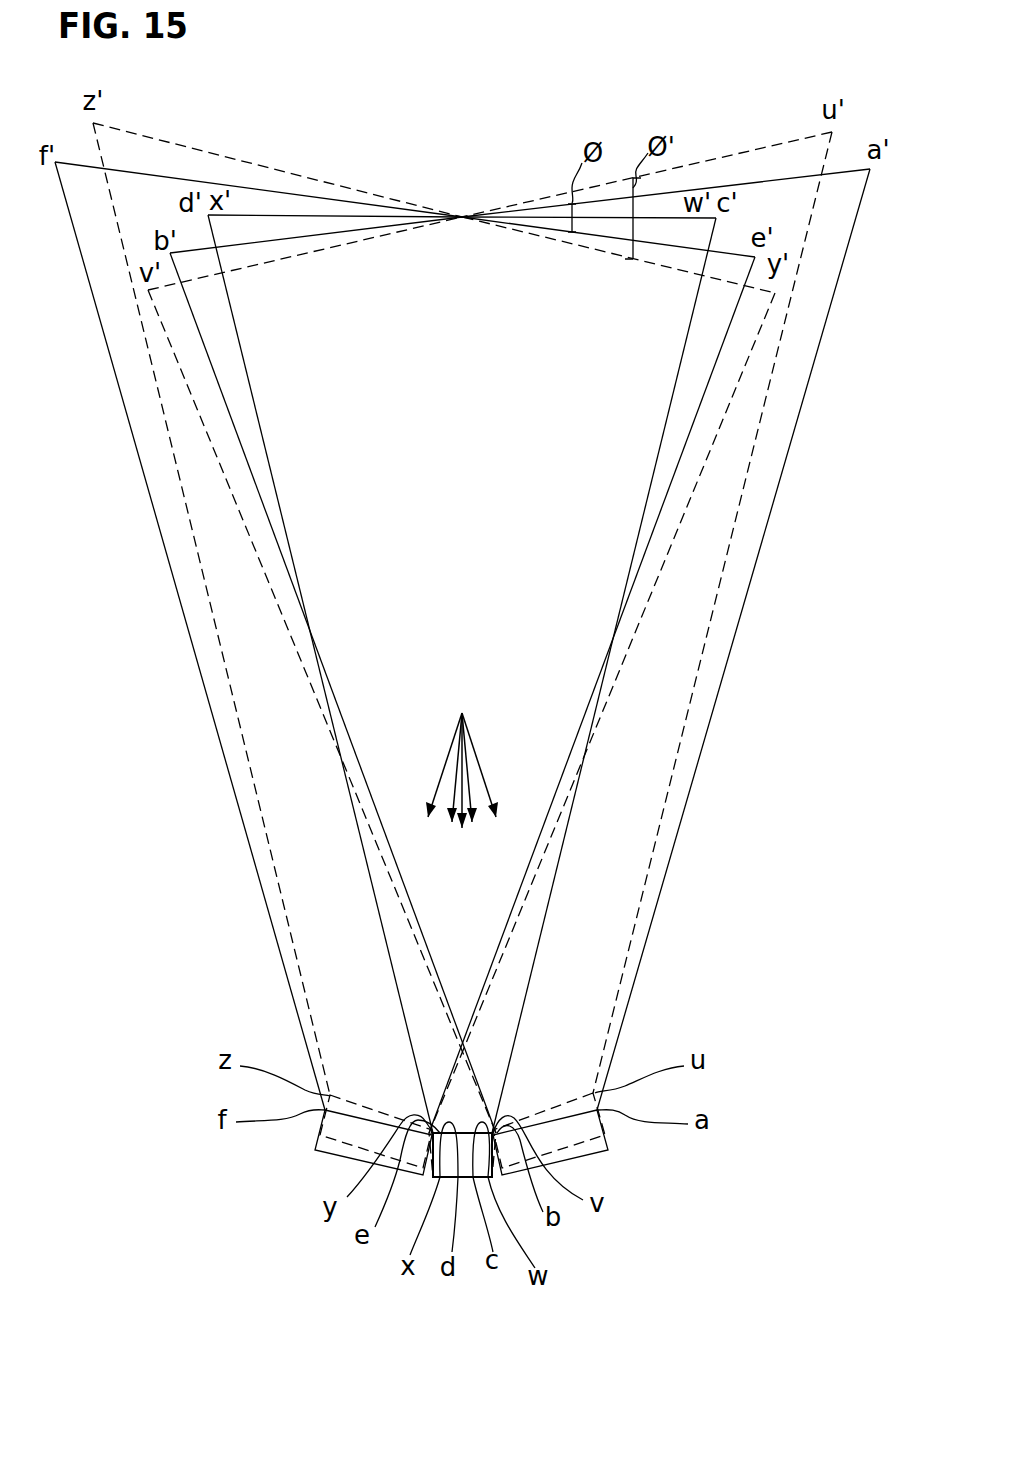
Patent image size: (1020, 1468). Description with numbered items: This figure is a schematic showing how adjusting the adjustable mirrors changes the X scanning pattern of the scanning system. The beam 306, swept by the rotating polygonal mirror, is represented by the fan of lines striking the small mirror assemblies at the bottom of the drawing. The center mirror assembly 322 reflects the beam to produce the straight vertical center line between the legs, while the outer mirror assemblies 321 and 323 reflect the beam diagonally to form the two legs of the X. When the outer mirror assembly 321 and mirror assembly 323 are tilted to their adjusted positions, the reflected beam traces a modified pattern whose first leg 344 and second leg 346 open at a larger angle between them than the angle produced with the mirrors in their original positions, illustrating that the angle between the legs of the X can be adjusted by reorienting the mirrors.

The beam 306 is at (462, 755).
The adjustable mirror assembly 321 is at (608, 1135).
The adjustable mirror assembly 322 is at (462, 1177).
The adjustable mirror assembly 323 is at (315, 1135).
The first leg 344 is at (747, 150).
The second leg 346 is at (210, 152).